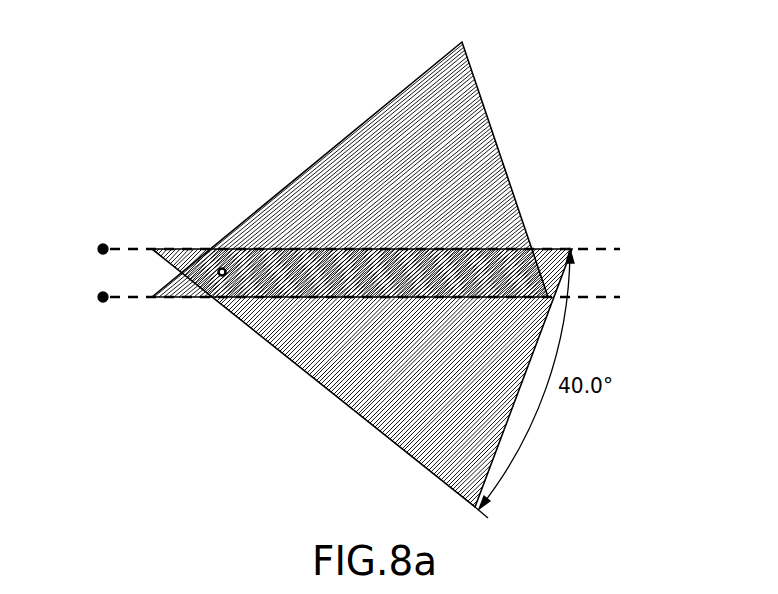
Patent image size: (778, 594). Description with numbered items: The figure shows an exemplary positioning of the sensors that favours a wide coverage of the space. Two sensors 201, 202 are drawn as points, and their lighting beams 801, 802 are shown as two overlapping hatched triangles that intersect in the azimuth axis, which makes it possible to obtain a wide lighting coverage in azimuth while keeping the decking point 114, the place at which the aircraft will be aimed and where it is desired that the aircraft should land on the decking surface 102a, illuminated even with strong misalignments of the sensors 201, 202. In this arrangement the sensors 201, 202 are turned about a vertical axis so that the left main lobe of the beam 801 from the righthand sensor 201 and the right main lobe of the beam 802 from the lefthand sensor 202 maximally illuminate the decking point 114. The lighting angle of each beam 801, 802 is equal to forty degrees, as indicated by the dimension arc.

The decking surface 102a is at (610, 272).
The decking point 114 is at (222, 268).
The righthand sensor 201 is at (103, 246).
The lefthand sensor 202 is at (103, 300).
The lighting beam 801 is at (363, 121).
The lighting beam 802 is at (330, 394).